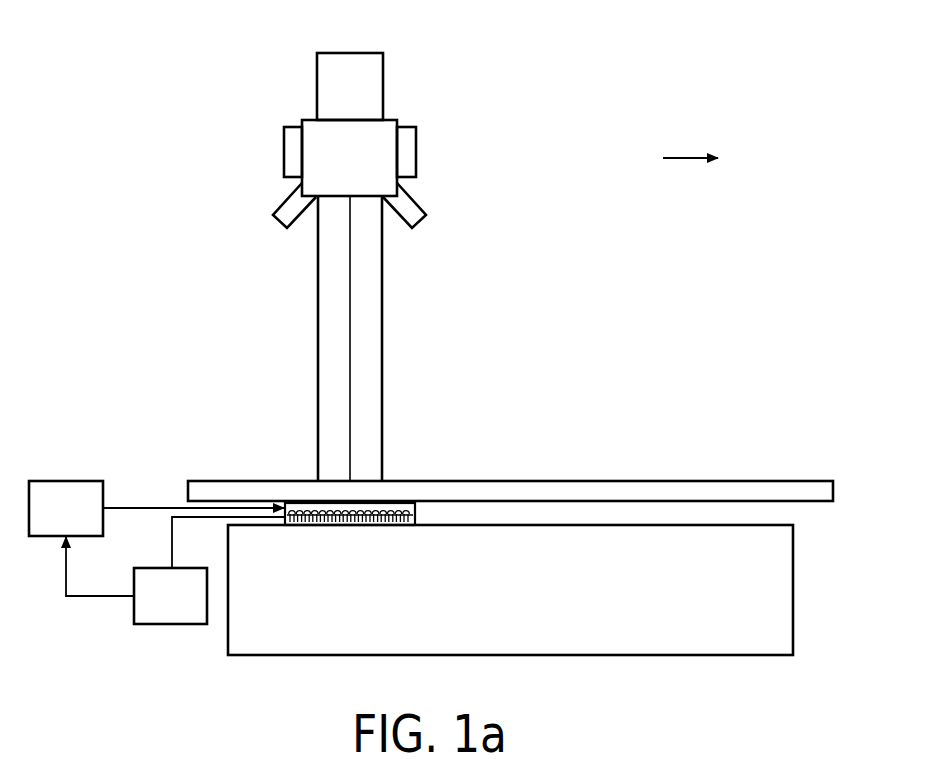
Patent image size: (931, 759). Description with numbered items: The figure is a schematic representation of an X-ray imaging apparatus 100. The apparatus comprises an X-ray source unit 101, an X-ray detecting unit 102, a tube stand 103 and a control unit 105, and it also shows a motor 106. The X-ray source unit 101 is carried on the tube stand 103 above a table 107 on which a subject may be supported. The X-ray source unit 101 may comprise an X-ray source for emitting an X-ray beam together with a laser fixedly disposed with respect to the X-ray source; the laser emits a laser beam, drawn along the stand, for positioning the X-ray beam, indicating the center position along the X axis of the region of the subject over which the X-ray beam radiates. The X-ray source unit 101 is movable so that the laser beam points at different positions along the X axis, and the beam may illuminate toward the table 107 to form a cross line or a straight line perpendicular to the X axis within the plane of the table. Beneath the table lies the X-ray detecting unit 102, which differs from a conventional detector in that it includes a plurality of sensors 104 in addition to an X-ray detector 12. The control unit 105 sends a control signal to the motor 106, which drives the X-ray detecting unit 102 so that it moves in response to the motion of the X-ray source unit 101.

The X-ray imaging apparatus 100 is at (190, 83).
The X-ray source unit 101 is at (368, 170).
The X-ray detecting unit 102 is at (417, 510).
The tube stand 103 is at (317, 322).
The sensors 104 is at (380, 527).
The control unit 105 is at (191, 608).
The motor 106 is at (86, 522).
The table 107 is at (590, 481).
The X-ray detector 12 is at (308, 527).